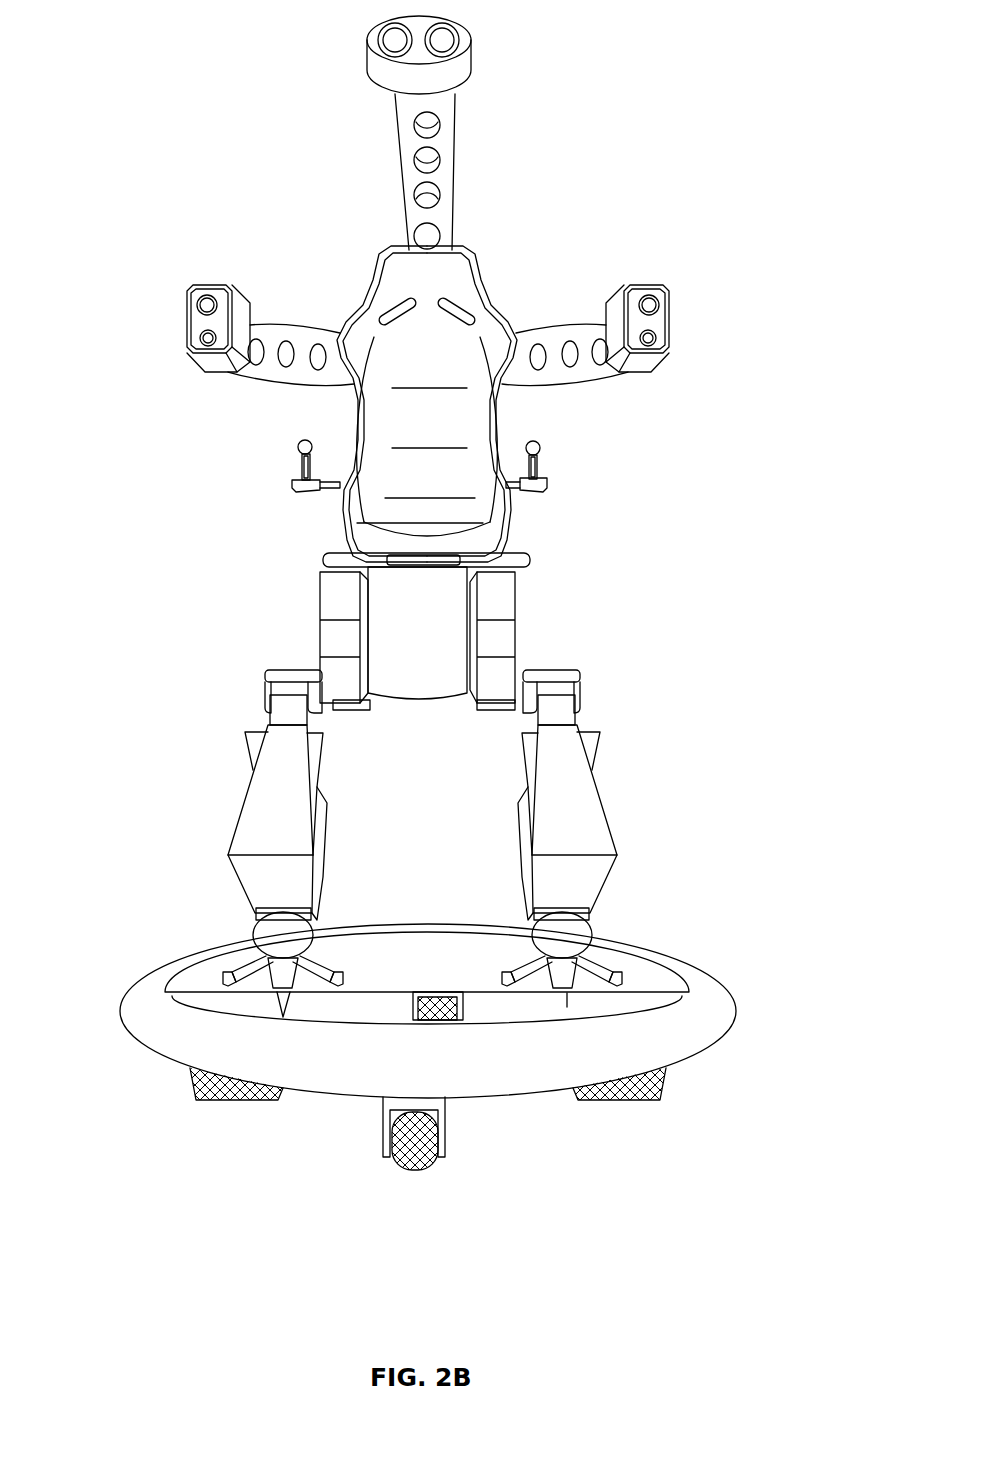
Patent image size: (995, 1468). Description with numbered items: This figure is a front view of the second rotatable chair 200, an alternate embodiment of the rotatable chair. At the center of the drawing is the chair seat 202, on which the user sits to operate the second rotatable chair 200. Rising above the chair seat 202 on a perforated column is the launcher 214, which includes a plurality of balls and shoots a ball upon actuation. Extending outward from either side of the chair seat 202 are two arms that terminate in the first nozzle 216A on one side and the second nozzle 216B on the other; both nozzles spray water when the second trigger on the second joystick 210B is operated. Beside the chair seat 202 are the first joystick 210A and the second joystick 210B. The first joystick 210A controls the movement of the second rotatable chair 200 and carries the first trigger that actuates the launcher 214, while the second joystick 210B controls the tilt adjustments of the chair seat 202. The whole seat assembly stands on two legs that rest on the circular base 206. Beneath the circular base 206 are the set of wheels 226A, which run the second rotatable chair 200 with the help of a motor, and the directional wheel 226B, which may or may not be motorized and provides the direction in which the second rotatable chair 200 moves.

The second rotatable chair 200 is at (204, 1275).
The chair seat 202 is at (475, 251).
The circular base 206 is at (737, 1002).
The first joystick 210A is at (298, 453).
The second joystick 210B is at (543, 445).
The launcher 214 is at (472, 37).
The first nozzle 216A is at (187, 295).
The second nozzle 216B is at (670, 287).
The set of wheels 226A is at (663, 1085).
The directional wheel 226B is at (390, 1170).